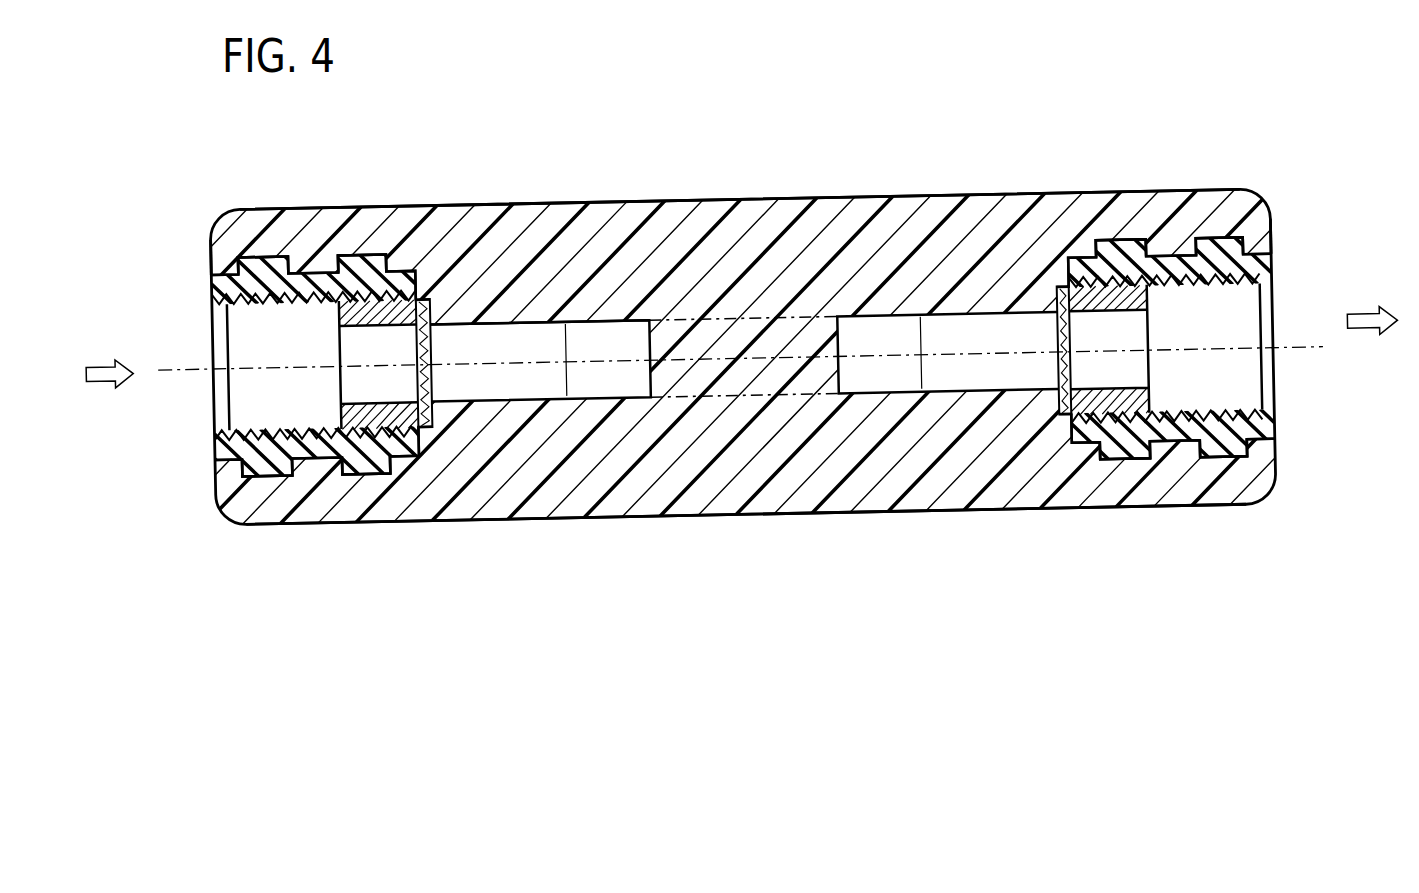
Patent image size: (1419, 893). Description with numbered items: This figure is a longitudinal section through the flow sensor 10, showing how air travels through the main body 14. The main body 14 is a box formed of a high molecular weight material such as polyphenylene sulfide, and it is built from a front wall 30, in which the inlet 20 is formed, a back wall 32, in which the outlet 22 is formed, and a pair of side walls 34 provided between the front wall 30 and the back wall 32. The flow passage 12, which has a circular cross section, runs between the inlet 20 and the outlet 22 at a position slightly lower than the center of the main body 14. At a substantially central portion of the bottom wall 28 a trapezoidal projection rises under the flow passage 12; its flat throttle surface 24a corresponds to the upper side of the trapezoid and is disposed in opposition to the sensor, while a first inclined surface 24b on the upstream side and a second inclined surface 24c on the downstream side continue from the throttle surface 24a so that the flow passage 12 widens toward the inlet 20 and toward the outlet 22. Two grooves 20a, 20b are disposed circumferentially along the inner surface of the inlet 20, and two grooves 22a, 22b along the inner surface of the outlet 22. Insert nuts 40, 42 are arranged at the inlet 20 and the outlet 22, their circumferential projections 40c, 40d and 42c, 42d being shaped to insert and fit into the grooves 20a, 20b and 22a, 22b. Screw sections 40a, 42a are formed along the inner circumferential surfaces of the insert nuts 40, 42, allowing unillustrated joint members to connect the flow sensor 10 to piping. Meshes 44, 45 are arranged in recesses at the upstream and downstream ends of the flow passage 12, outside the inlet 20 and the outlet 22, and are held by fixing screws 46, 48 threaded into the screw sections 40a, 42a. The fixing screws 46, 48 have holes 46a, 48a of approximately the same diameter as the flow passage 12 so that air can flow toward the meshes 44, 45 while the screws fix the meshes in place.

The flow sensor 10 is at (357, 146).
The flow passage 12 is at (547, 379).
The main body 14 is at (835, 505).
The inlet 20 is at (235, 336).
The groove 20a is at (277, 478).
The groove 20b is at (373, 478).
The outlet 22 is at (1247, 320).
The groove 22a is at (1137, 460).
The groove 22b is at (1230, 460).
The throttle surface 24a is at (736, 357).
The first inclined surface 24b is at (611, 355).
The second inclined surface 24c is at (884, 348).
The bottom wall 28 is at (525, 355).
The front wall 30 is at (206, 249).
The back wall 32 is at (1272, 223).
The side wall 34 is at (453, 207).
The insert nut 40 is at (222, 288).
The screw section 40a is at (247, 432).
The projection 40c is at (257, 262).
The projection 40d is at (358, 262).
The insert nut 42 is at (1268, 262).
The screw section 42a is at (1217, 413).
The projection 42c is at (1218, 242).
The projection 42d is at (1115, 255).
The mesh 44 is at (432, 383).
The mesh 45 is at (1058, 376).
The fixing screw 46 is at (353, 415).
The hole 46a is at (355, 328).
The fixing screw 48 is at (1132, 401).
The hole 48a is at (1133, 313).